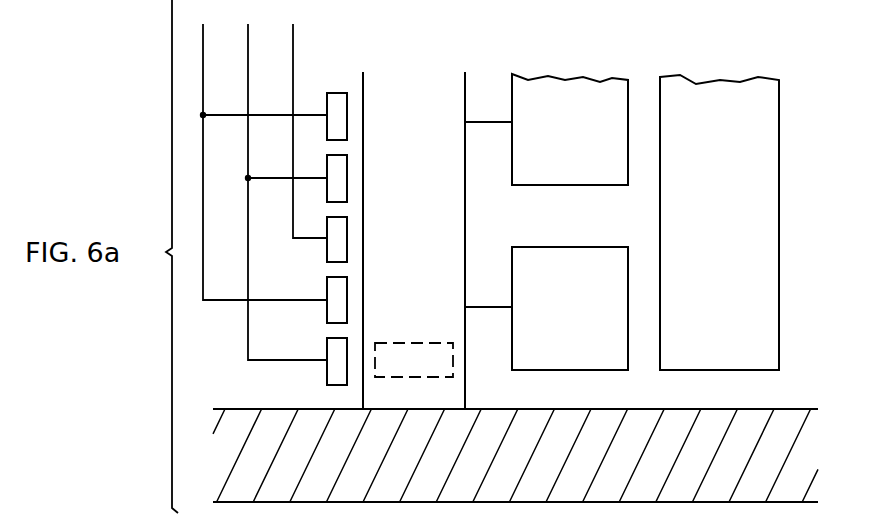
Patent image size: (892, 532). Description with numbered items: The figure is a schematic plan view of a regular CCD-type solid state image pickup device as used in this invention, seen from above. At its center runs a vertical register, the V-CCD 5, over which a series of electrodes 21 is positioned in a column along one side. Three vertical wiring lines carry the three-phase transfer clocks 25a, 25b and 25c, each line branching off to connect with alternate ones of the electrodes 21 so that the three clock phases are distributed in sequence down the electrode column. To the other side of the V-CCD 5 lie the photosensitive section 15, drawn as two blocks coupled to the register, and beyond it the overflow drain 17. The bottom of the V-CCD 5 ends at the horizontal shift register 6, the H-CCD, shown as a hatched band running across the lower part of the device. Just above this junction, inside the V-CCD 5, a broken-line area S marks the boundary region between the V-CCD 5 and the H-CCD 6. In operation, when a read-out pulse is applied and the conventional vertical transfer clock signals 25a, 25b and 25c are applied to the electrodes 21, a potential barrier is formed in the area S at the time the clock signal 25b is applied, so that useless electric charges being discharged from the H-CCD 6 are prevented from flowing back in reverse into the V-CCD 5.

The three-phase transfer clock 25a is at (253, 150).
The three-phase transfer clock 25b is at (279, 180).
The three-phase transfer clock 25c is at (304, 119).
The electrodes 21 is at (318, 87).
The V-CCD 5 is at (357, 60).
The broken-line area S is at (443, 362).
The photosensitive section 15 is at (583, 252).
The overflow drain 17 is at (738, 85).
The horizontal shift register 6 is at (681, 410).